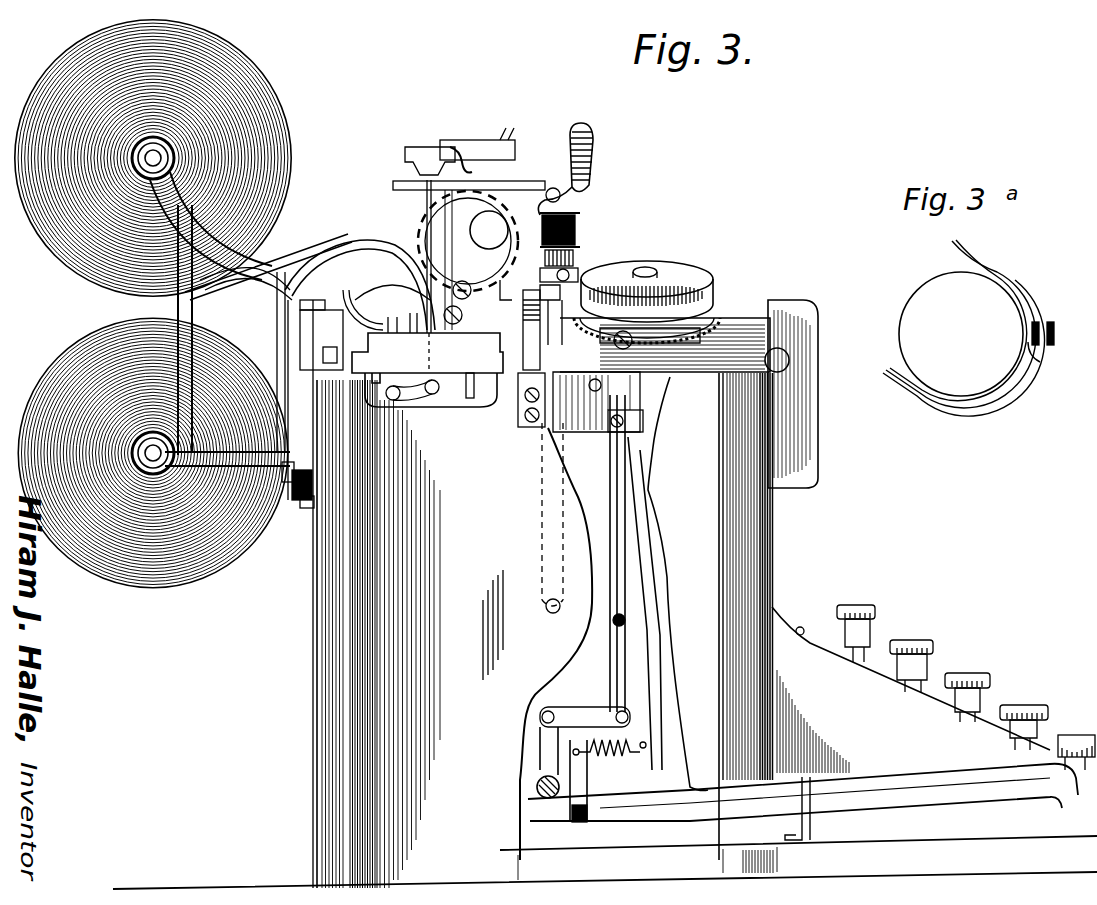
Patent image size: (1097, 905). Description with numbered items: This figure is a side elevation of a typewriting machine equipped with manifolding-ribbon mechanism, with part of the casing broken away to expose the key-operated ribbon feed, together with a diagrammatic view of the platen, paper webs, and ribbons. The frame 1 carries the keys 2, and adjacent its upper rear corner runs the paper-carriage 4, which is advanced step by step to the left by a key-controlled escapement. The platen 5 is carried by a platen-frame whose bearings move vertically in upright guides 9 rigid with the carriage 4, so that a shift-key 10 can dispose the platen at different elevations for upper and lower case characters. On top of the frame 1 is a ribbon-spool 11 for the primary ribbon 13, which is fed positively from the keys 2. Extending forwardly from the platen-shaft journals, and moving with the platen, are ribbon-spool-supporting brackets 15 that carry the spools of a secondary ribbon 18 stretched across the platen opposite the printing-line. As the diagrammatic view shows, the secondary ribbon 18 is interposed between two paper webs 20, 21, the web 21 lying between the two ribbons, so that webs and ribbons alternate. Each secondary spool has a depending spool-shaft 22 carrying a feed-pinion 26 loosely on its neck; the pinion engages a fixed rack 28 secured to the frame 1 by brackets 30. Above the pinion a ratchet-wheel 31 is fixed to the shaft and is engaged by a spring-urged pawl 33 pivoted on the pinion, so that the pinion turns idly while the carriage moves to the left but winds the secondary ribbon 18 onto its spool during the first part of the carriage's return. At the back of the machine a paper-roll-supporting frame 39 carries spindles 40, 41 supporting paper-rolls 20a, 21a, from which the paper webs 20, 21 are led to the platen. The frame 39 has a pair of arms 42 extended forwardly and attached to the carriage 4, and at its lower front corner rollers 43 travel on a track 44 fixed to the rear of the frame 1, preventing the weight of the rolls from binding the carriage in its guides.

In FIG. 3, the frame 1 is at (605, 594).
In FIG. 3, the keys 2 is at (915, 652).
In FIG. 3, the paper-carriage 4 is at (427, 293).
In FIG. 3, the platen 5 is at (470, 185).
In FIG. 3A, the platen 5 is at (925, 297).
In FIG. 3, the upright guides 9 is at (468, 257).
In FIG. 3, the shift-key 10 is at (1015, 710).
In FIG. 3, the ribbon-spool 11 is at (663, 263).
In FIG. 3, the primary ribbon 13 is at (578, 270).
In FIG. 3A, the primary ribbon 13 is at (1056, 331).
In FIG. 3, the ribbon-spool-supporting brackets 15 is at (580, 252).
In FIG. 3, the secondary ribbon 18 is at (580, 224).
In FIG. 3A, the secondary ribbon 18 is at (1040, 362).
In FIG. 3, the paper web 20 is at (317, 285).
In FIG. 3A, the paper web 20 is at (1033, 308).
In FIG. 3, the paper-roll 20a is at (30, 392).
In FIG. 3, the paper web 21 is at (312, 246).
In FIG. 3A, the paper web 21 is at (955, 246).
In FIG. 3, the paper-roll 21a is at (263, 111).
In FIG. 3, the spool-shaft 22 is at (555, 291).
In FIG. 3, the feed-pinion 26 is at (552, 323).
In FIG. 3, the fixed rack 28 is at (524, 315).
In FIG. 3, the brackets 30 is at (518, 398).
In FIG. 3, the ratchet-wheel 31 is at (511, 294).
In FIG. 3, the pawl 33 is at (593, 390).
In FIG. 3, the paper-roll-supporting frame 39 is at (186, 310).
In FIG. 3, the spindle 40 is at (227, 459).
In FIG. 3, the spindle 41 is at (211, 226).
In FIG. 3, the arms 42 is at (352, 302).
In FIG. 3, the rollers 43 is at (296, 508).
In FIG. 3, the track 44 is at (304, 501).